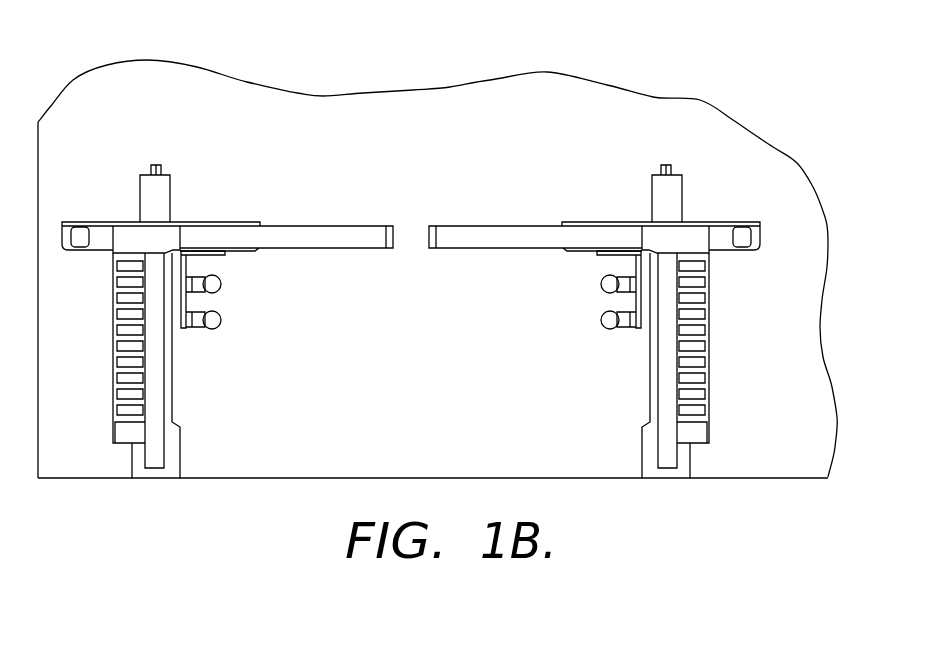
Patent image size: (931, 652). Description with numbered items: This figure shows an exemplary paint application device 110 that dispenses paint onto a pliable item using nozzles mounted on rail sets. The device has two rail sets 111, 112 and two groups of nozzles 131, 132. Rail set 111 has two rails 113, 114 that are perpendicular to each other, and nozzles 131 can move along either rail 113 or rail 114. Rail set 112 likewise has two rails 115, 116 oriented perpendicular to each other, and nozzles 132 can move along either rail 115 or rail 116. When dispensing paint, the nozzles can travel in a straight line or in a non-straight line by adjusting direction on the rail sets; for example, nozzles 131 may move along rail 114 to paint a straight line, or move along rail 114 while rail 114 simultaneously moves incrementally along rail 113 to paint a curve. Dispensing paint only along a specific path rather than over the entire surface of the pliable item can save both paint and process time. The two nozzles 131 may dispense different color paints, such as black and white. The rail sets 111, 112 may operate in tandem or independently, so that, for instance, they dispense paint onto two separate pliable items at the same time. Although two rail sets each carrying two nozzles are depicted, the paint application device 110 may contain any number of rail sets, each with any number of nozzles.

The paint application device 110 is at (281, 37).
The rail set 111 is at (587, 123).
The rail set 112 is at (137, 130).
The rail 113 is at (510, 225).
The rail 114 is at (658, 385).
The rail 115 is at (167, 368).
The rail 116 is at (312, 225).
The nozzles 131 is at (600, 283).
The nozzles 132 is at (222, 282).